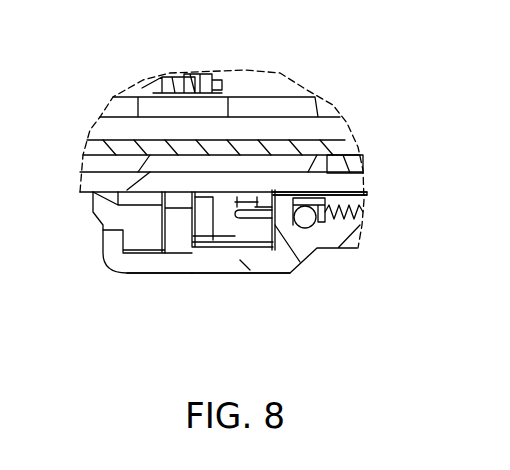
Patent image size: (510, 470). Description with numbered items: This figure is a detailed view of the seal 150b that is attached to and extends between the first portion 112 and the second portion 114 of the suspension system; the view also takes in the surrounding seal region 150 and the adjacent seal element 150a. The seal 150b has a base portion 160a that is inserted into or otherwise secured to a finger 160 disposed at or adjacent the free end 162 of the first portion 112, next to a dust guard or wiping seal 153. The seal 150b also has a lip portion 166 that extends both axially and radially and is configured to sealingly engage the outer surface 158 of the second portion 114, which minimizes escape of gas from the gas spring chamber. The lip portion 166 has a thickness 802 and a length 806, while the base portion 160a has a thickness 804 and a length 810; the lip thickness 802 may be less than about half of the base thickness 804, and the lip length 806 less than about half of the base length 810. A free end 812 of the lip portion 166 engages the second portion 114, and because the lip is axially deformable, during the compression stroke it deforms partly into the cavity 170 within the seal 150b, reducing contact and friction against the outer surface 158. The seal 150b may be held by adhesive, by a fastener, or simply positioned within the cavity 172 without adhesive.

The first portion 112 is at (152, 60).
The second portion 114 is at (95, 212).
The body 150 is at (250, 250).
The first body portion 150a is at (175, 245).
The seal 150b is at (197, 247).
The dust guard 153 is at (137, 232).
The outer surface 158 is at (362, 199).
The finger 160 is at (190, 230).
The base portion 160a is at (220, 205).
The free end 162 is at (125, 280).
The lip portion 166 is at (367, 190).
The cavity 170 is at (278, 254).
The cavity 172 is at (266, 222).
The thickness 802 is at (293, 213).
The thickness 804 is at (223, 213).
The length 806 is at (242, 190).
The length 810 is at (220, 200).
The free end 812 is at (270, 187).